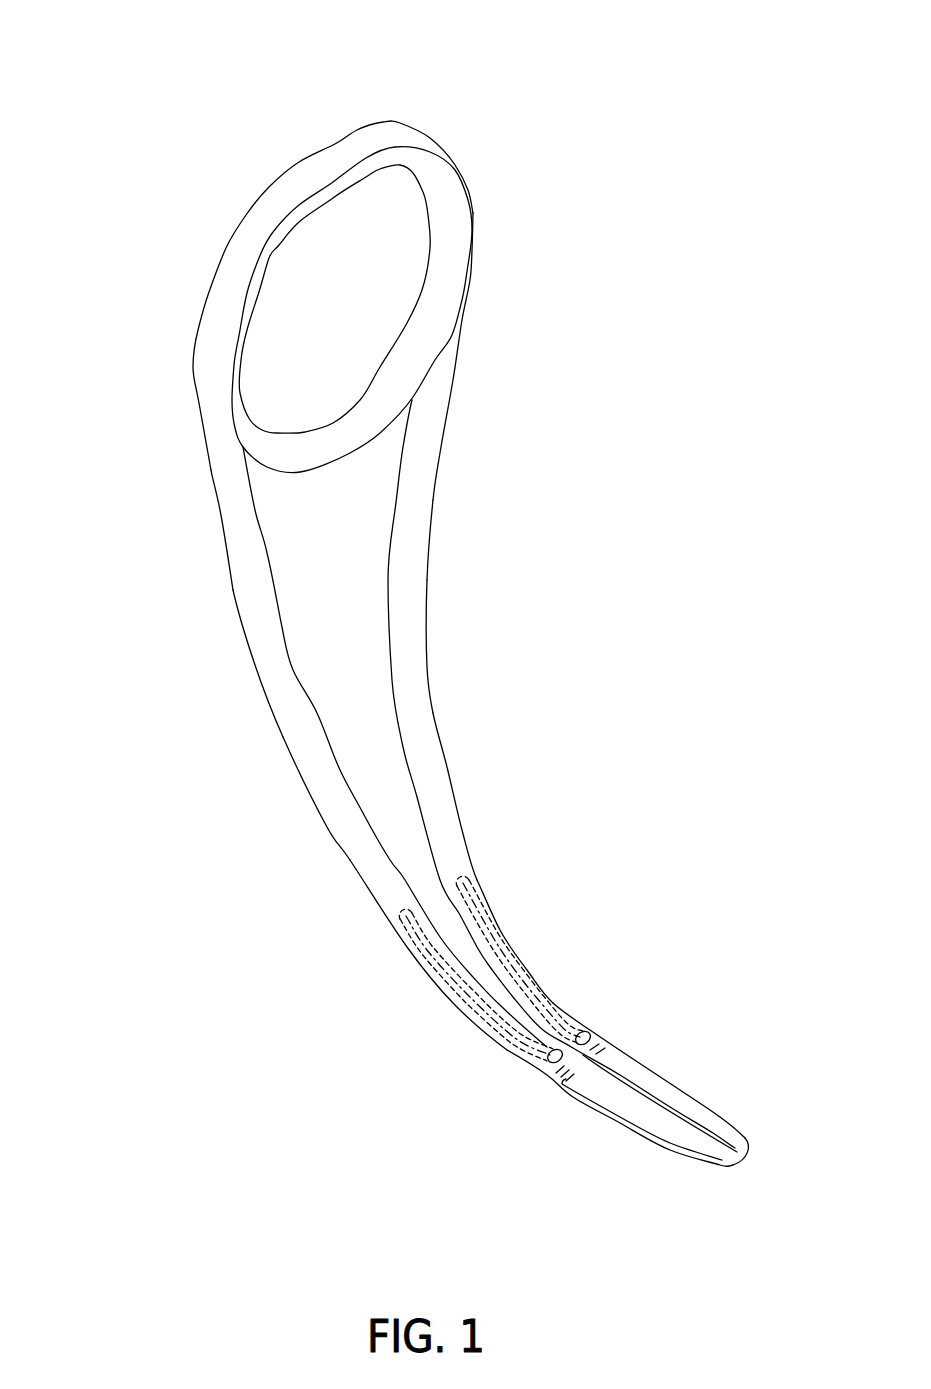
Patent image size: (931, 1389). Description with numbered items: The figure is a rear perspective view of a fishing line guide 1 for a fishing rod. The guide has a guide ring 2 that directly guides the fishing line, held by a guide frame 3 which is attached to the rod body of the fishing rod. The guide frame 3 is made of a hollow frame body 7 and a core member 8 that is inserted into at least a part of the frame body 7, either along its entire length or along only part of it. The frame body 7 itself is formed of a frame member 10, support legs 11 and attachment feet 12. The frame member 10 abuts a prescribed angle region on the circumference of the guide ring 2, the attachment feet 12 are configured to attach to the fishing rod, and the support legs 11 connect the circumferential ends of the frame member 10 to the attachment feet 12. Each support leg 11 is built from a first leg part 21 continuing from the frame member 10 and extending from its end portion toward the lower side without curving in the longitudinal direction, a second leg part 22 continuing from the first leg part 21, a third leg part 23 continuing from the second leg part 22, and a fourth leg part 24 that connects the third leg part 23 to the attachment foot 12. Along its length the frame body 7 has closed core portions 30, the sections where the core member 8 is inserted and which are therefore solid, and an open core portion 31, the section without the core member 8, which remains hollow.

The fishing line guide 1 is at (676, 326).
The guide ring 2 is at (453, 252).
The guide frame 3 is at (435, 492).
The frame body 7 is at (210, 277).
The core member 8 is at (410, 977).
The frame member 10 is at (299, 158).
The support leg 11 is at (427, 607).
The attachment foot 12 is at (640, 1128).
The first leg part 21 is at (453, 380).
The second leg part 22 is at (283, 737).
The third leg part 23 is at (540, 1052).
The fourth leg part 24 is at (558, 1080).
The closed core portion 30 is at (455, 1010).
The open core portion 31 is at (327, 827).